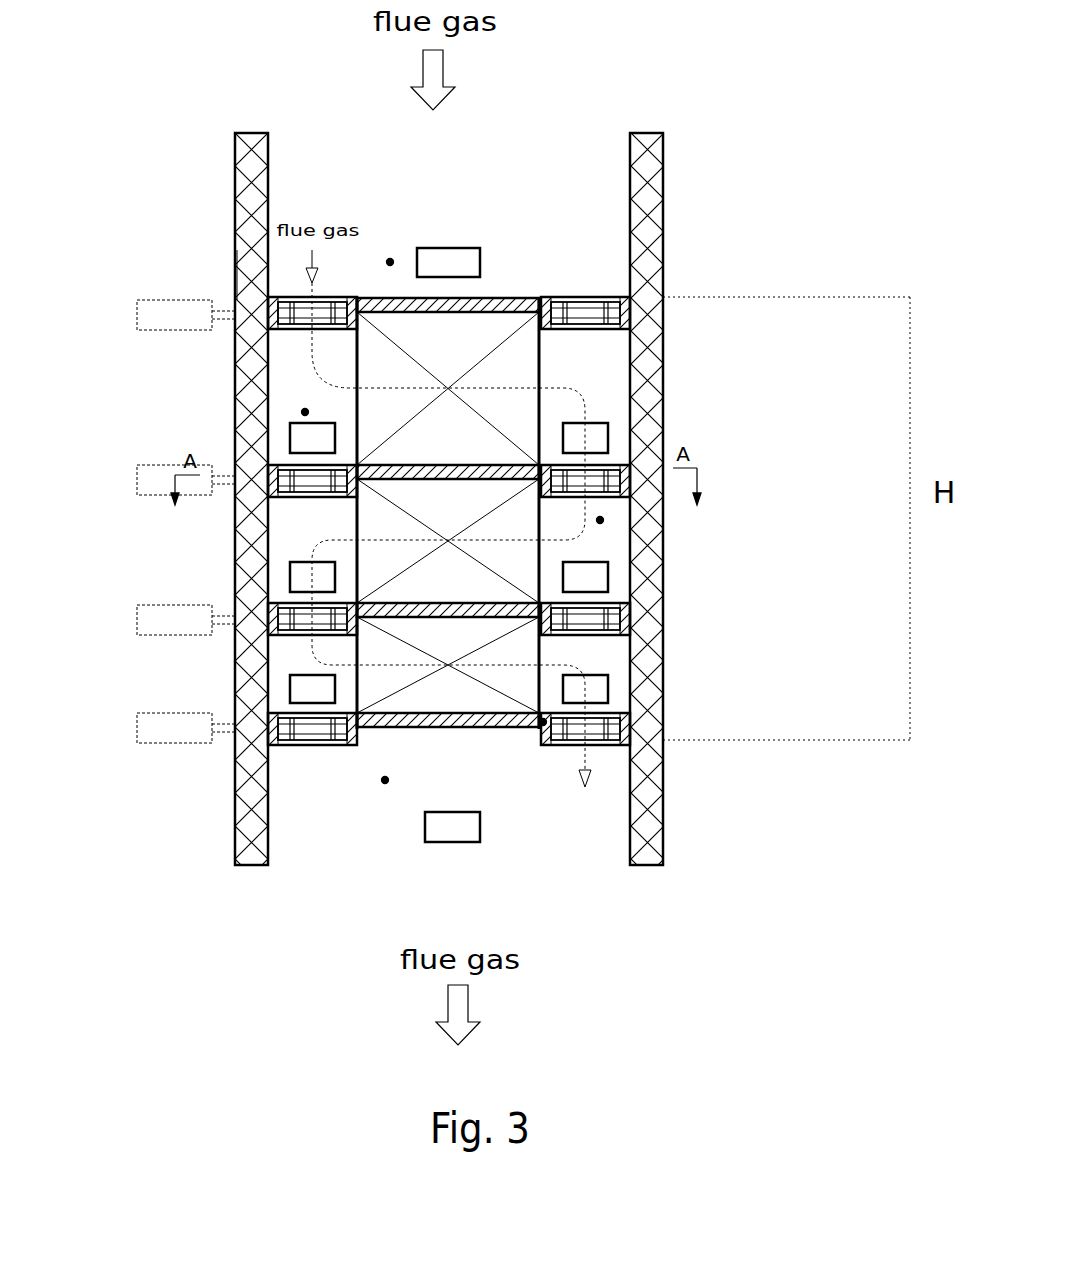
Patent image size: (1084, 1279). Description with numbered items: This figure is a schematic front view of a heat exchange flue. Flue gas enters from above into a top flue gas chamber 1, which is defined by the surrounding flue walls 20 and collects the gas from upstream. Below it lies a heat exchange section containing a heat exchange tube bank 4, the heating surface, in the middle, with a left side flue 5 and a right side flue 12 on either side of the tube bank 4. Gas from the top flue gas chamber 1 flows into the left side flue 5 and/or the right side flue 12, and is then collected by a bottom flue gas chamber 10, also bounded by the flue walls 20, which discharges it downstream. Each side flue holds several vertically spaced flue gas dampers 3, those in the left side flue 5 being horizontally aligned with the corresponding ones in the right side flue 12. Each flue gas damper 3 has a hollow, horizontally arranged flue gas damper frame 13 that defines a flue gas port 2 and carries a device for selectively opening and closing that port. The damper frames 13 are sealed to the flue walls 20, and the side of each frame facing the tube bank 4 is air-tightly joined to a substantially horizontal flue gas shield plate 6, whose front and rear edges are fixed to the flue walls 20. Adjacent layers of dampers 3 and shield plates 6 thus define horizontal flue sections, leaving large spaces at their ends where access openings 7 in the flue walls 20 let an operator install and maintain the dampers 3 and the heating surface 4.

The top flue gas chamber 1 is at (390, 262).
The flue gas port 2 is at (252, 270).
The flue gas damper 3 is at (287, 313).
The heat exchange tube bank 4 is at (380, 413).
The left side flue 5 is at (305, 412).
The flue gas shield plate 6 is at (313, 440).
The access opening 7 is at (448, 262).
The bottom flue gas chamber 10 is at (385, 780).
The right side flue 12 is at (600, 520).
The flue gas damper frame 13 is at (543, 722).
The flue wall 20 is at (248, 178).